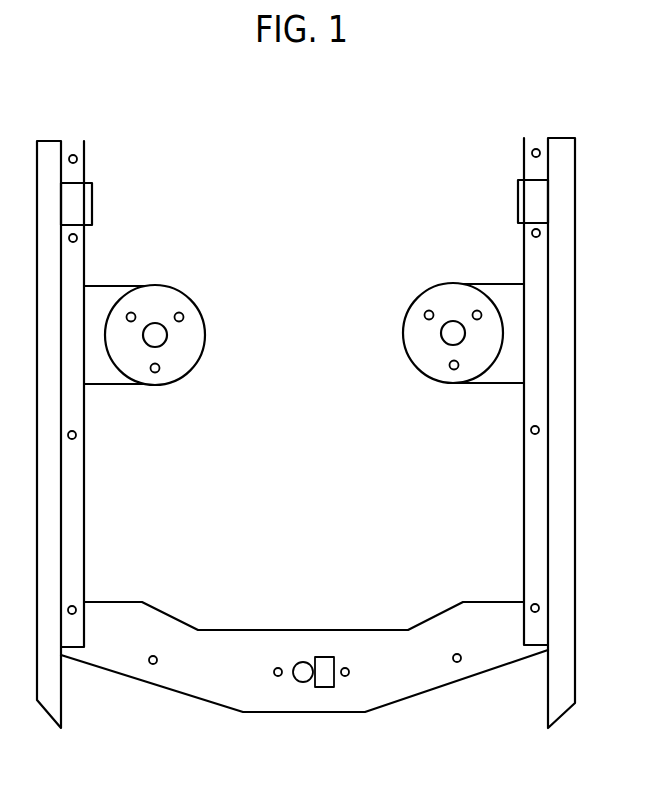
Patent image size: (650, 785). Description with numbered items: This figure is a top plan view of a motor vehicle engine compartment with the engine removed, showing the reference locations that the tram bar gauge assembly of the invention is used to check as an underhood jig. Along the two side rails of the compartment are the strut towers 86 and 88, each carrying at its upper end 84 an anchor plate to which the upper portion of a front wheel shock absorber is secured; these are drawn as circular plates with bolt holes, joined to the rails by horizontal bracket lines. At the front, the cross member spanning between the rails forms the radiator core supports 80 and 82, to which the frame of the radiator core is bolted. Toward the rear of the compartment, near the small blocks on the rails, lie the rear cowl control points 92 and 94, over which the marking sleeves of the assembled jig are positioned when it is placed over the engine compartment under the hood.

The radiator core support 80 is at (529, 605).
The radiator core support 82 is at (79, 605).
The upper end of strut tower 84 is at (172, 302).
The strut tower 86 is at (432, 380).
The strut tower 88 is at (163, 385).
The rear cowl control point 92 is at (530, 233).
The rear cowl control point 94 is at (79, 238).